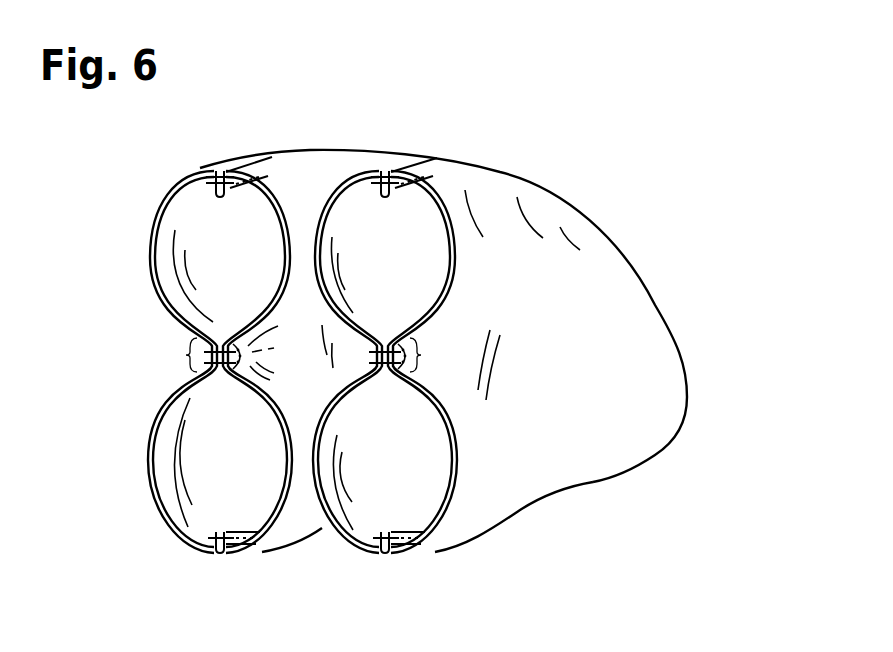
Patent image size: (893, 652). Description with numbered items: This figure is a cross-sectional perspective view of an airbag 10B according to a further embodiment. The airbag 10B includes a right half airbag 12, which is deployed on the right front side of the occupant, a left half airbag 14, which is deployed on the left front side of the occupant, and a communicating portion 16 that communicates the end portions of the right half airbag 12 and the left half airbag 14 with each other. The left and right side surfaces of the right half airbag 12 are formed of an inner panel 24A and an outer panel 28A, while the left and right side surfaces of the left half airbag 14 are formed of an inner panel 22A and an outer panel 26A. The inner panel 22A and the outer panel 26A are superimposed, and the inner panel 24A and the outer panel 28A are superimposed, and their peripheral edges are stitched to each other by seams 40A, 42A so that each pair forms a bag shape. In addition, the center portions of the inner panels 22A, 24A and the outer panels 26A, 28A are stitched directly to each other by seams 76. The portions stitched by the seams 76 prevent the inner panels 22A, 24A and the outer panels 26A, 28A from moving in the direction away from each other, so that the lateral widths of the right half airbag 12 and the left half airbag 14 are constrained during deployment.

The airbag 10B is at (594, 192).
The right half airbag 12 is at (494, 544).
The left half airbag 14 is at (149, 202).
The communicating portion 16 is at (652, 458).
The inner panel 22A is at (338, 518).
The inner panel 24A is at (282, 232).
The outer panel 26A is at (448, 233).
The outer panel 28A is at (172, 515).
The seam 40A is at (378, 197).
The seam 42A is at (213, 197).
The seams 76 is at (189, 355).